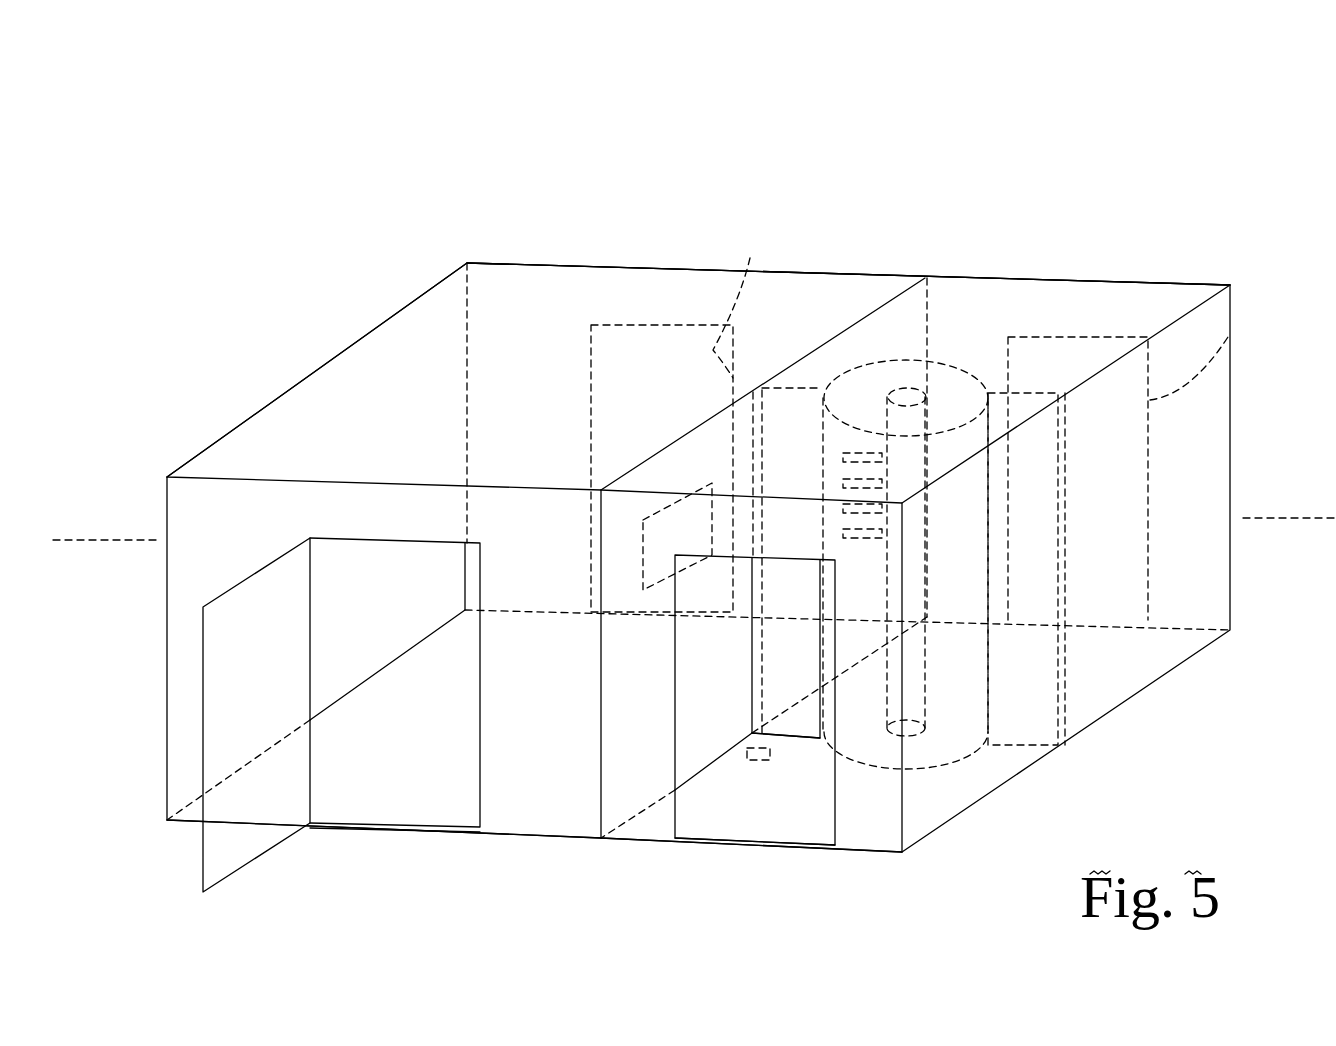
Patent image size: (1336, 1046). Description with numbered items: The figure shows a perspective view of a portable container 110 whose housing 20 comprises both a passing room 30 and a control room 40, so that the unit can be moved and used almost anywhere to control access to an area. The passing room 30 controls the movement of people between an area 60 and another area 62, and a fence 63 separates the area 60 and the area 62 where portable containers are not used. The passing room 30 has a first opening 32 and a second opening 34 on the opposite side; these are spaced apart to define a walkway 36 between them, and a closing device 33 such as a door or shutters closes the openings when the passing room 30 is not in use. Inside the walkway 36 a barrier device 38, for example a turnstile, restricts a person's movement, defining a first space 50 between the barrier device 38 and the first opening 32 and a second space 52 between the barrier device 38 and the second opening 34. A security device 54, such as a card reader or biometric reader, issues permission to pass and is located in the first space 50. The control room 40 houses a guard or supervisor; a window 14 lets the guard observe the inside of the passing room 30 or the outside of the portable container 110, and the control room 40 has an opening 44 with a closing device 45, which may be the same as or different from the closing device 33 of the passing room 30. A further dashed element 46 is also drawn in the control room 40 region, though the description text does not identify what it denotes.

The portable container 110 is at (727, 153).
The housing 20 is at (207, 447).
The control room 40 is at (520, 303).
The passing room 30 is at (948, 310).
The window 14 is at (643, 566).
The opening 44 is at (437, 815).
The closing device 45 is at (233, 868).
The air duct 46 is at (680, 347).
The first opening 32 is at (832, 798).
The walkway 36 is at (790, 775).
The first space 50 is at (779, 836).
The security device 54 is at (745, 752).
The barrier device 38 is at (938, 362).
The second space 52 is at (1000, 731).
The second opening 34 is at (1127, 336).
The closing device 33 is at (1240, 331).
The area 62 is at (1100, 173).
The area 60 is at (662, 943).
The fence 63 is at (110, 540).